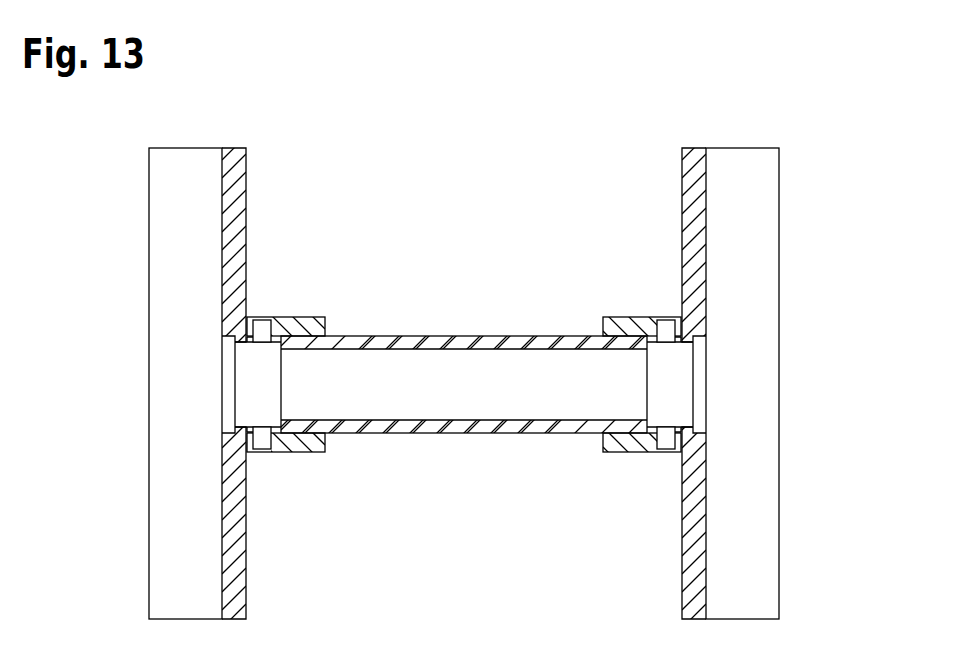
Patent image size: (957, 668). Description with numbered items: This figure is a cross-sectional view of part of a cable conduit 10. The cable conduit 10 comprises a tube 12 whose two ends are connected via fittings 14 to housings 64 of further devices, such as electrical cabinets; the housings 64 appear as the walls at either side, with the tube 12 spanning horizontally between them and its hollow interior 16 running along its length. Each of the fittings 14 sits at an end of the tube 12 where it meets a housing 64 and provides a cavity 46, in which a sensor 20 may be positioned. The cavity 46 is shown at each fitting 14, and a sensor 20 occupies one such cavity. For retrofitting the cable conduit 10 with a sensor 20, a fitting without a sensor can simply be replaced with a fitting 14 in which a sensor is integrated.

The cable conduit 10 is at (821, 127).
The tube 12 is at (485, 342).
The fitting 14 is at (310, 318).
The bore / hollow interior 16 is at (430, 352).
The sensor 20 is at (262, 445).
The cavity 46 is at (464, 384).
The housing 64 is at (234, 157).